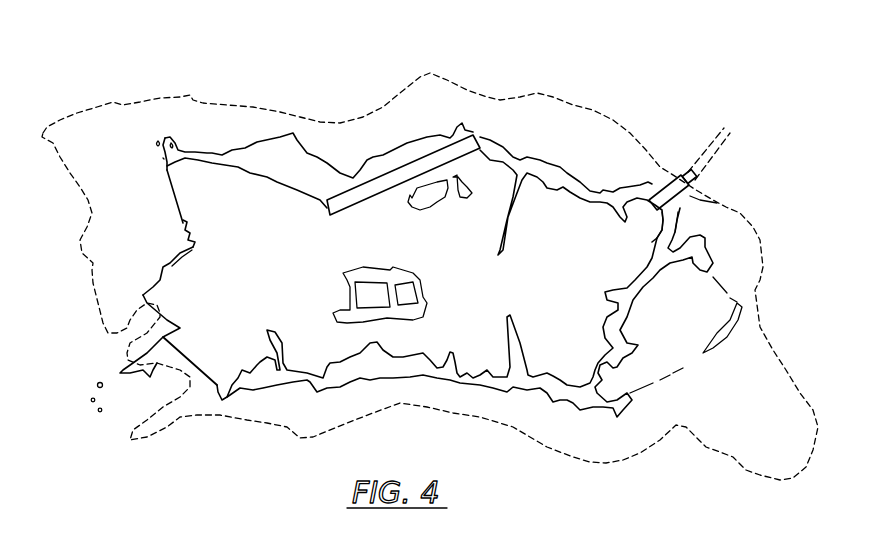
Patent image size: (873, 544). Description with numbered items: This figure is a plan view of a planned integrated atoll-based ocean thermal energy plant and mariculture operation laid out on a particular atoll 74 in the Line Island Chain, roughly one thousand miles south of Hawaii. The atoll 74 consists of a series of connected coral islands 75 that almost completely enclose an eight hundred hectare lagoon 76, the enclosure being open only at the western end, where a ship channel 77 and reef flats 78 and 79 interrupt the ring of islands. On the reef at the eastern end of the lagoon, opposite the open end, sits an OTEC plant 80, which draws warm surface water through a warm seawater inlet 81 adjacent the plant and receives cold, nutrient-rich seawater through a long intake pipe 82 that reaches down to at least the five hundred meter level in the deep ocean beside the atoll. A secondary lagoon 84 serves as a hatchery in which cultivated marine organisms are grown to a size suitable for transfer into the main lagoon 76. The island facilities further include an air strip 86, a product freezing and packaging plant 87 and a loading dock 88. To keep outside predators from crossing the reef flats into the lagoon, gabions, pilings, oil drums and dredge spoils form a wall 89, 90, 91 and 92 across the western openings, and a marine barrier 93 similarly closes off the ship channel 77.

The atoll 74 is at (482, 84).
The connected coral islands 75 is at (543, 173).
The lagoon 76 is at (452, 268).
The ship channel 77 is at (137, 326).
The reef flat 78 is at (142, 218).
The reef flat 79 is at (246, 358).
The OTEC plant 80 is at (690, 197).
The warm seawater inlet 81 is at (710, 179).
The intake pipe 82 is at (684, 175).
The secondary lagoon 84 is at (433, 193).
The air strip 86 is at (390, 177).
The product freezing and packaging plant 87 is at (666, 177).
The loading dock 88 is at (655, 238).
The wall 89 is at (176, 202).
The wall 90 is at (190, 234).
The wall 91 is at (180, 255).
The wall 92 is at (187, 352).
The marine barrier 93 is at (160, 306).